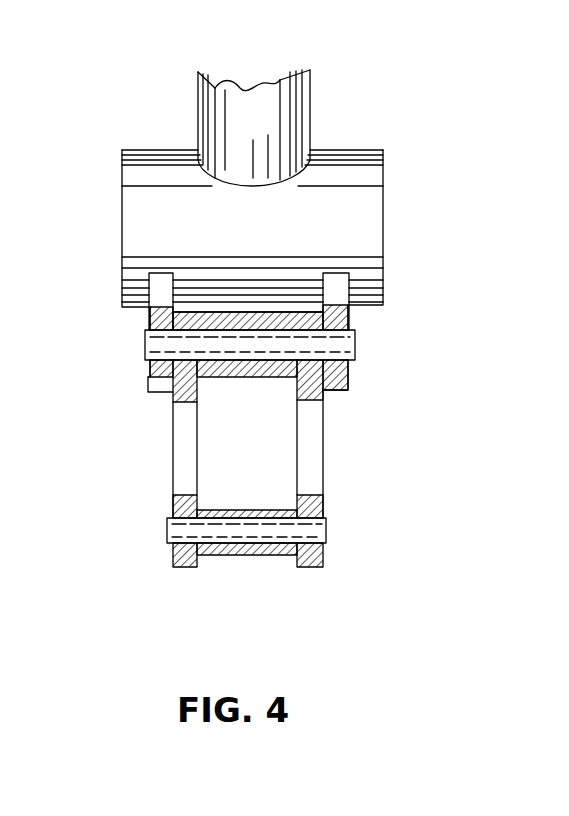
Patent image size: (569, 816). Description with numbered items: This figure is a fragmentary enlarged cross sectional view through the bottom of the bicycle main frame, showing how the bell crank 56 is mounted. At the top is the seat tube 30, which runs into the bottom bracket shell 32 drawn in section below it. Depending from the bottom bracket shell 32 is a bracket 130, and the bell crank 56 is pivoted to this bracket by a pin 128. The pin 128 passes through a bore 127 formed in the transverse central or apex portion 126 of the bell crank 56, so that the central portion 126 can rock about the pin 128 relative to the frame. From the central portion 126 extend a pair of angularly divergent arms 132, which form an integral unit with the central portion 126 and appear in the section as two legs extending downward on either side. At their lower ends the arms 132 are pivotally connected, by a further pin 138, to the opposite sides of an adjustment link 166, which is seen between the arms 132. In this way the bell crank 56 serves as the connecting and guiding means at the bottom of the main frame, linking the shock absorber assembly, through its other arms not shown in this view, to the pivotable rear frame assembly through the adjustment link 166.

The seat tube 30 is at (270, 120).
The bottom bracket shell 32 is at (270, 254).
The bracket 130 is at (163, 292).
The bore 127 is at (245, 336).
The pin 128 is at (340, 343).
The transverse central portion 126 is at (213, 373).
The arms 132 is at (183, 437).
The pin 138 is at (300, 532).
The adjustment link 166 is at (257, 552).
The bell crank 56 is at (328, 566).